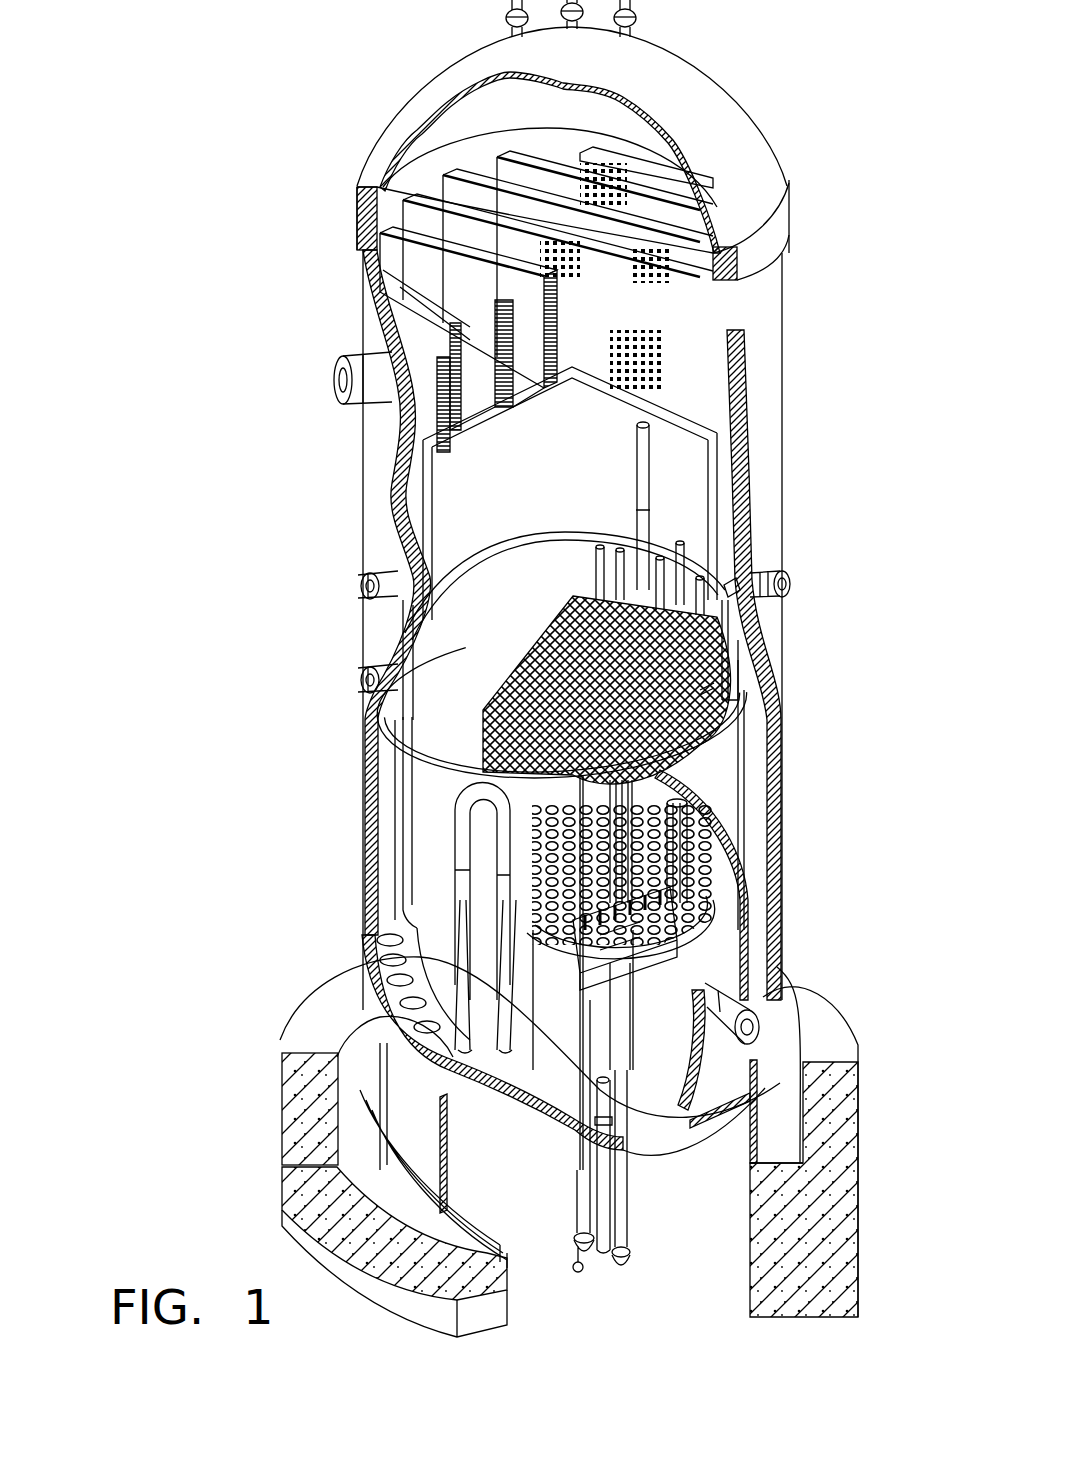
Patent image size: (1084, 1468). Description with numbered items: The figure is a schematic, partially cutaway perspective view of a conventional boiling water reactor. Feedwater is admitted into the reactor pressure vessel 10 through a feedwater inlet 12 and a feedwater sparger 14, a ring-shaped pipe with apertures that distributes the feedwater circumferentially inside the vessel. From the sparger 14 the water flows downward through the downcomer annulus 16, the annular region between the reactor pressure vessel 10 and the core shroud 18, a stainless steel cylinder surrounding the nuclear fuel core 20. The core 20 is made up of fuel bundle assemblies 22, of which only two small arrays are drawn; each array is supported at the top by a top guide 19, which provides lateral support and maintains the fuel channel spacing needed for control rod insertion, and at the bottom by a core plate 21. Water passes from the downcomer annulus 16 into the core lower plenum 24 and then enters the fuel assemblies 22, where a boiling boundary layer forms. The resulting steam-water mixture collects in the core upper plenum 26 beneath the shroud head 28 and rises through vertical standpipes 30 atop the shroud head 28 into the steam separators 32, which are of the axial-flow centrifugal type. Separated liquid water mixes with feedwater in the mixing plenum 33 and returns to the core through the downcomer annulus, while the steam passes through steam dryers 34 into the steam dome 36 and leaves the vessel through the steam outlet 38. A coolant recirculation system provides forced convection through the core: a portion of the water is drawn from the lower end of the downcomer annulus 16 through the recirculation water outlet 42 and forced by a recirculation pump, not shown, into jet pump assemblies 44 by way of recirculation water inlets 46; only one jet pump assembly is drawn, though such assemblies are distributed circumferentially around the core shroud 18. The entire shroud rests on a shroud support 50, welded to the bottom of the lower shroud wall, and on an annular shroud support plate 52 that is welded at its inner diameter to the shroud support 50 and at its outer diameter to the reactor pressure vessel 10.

The reactor pressure vessel 10 is at (362, 896).
The feedwater inlet 12 is at (790, 586).
The feedwater sparger 14 is at (728, 590).
The downcomer annulus 16 is at (372, 864).
The core shroud 18 is at (418, 757).
The top guide 19 is at (718, 650).
The nuclear fuel core 20 is at (698, 818).
The core plate 21 is at (700, 880).
The fuel bundle assemblies 22 is at (652, 805).
The core lower plenum 24 is at (647, 1072).
The core upper plenum 26 is at (580, 593).
The shroud head 28 is at (505, 553).
The standpipes 30 is at (660, 565).
The steam separators 32 is at (643, 452).
The mixing plenum 33 is at (574, 482).
The steam dryers 34 is at (568, 318).
The steam dome 36 is at (485, 100).
The steam outlet 38 is at (340, 376).
The recirculation water outlet 42 is at (760, 1025).
The jet pump assemblies 44 is at (440, 848).
The recirculation water inlets 46 is at (488, 990).
The shroud support 50 is at (400, 956).
The shroud support plate 52 is at (358, 983).